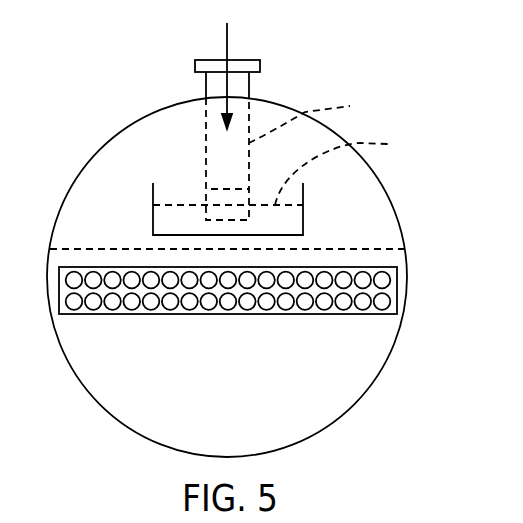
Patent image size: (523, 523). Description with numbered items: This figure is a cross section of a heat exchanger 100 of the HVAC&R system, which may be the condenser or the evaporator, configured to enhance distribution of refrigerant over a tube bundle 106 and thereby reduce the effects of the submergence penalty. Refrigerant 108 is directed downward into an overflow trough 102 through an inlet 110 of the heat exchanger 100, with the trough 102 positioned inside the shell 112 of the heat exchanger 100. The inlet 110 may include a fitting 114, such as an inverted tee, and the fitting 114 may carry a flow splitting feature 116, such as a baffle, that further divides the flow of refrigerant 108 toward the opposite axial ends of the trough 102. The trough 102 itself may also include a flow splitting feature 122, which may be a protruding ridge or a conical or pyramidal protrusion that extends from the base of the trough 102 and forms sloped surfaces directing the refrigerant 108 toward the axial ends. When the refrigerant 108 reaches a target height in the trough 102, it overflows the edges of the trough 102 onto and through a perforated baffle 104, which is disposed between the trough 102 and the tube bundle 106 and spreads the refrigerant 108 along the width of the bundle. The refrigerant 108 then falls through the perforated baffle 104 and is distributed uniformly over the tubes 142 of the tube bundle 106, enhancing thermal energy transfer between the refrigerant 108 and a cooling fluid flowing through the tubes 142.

The heat exchanger 100 is at (394, 57).
The overflow trough 102 is at (303, 218).
The perforated baffle 104 is at (367, 248).
The tube bundle 106 is at (397, 284).
The refrigerant 108 is at (227, 43).
The inlet 110 is at (250, 85).
The shell 112 is at (290, 107).
The fitting 114 is at (318, 118).
The flow splitting feature 116 is at (228, 189).
The flow splitting feature 122 is at (350, 169).
The tubes 142 is at (383, 310).